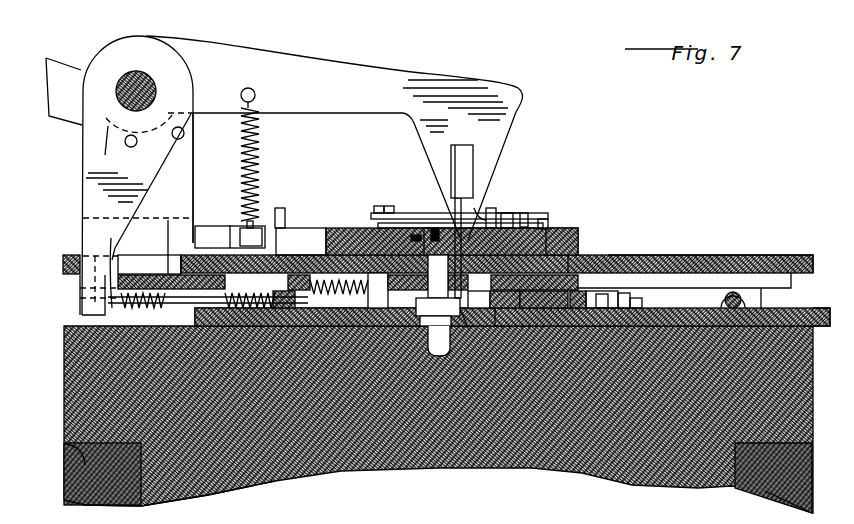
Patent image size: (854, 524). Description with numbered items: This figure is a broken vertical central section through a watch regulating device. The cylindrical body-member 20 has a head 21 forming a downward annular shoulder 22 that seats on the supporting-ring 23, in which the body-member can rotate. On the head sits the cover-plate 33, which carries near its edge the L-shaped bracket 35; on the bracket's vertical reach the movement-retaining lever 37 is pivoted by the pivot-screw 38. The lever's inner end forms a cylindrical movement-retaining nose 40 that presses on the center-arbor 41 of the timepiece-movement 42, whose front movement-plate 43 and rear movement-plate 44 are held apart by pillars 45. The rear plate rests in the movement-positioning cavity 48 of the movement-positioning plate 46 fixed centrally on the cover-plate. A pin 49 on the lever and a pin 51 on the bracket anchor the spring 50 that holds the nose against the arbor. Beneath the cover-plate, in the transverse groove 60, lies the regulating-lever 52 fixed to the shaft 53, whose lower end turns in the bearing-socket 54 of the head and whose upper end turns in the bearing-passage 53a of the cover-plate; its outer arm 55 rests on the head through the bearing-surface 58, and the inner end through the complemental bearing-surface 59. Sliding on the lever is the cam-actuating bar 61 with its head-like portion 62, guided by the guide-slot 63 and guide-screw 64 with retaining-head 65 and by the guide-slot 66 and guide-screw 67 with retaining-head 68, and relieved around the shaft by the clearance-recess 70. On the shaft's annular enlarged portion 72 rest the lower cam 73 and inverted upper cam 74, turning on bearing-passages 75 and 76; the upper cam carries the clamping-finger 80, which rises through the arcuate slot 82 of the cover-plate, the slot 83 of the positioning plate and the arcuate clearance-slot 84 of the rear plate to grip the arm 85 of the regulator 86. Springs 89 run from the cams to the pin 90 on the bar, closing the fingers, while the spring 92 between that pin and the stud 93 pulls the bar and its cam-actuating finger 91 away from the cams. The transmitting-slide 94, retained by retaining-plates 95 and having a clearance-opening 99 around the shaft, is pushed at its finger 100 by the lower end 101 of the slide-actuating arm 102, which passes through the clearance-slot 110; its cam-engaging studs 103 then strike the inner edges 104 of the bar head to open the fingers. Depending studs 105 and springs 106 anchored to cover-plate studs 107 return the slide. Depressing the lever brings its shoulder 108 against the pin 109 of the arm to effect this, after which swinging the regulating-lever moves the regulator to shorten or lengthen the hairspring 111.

The body-member 20 is at (168, 482).
The head 21 is at (65, 393).
The annular shoulder 22 is at (58, 460).
The supporting-ring 23 is at (90, 488).
The cover-plate 33 is at (707, 246).
The L-shaped bracket 35 is at (190, 150).
The movement-retaining lever 37 is at (330, 53).
The pivot-screw 38 is at (138, 66).
The movement-retaining nose 40 is at (466, 157).
The center-arbor 41 is at (461, 171).
The timepiece-movement 42 is at (532, 204).
The front movement-plate 43 is at (480, 203).
The rear movement-plate 44 is at (498, 205).
The pillars 45 is at (517, 212).
The movement-positioning plate 46 is at (568, 224).
The movement-positioning cavity 48 is at (540, 211).
The pin 49 is at (240, 80).
The spring 50 is at (253, 132).
The pin 51 is at (212, 216).
The regulating-lever 52 is at (662, 308).
The shaft 53 is at (428, 345).
The bearing-passage 53a is at (421, 158).
The bearing-socket 54 is at (440, 348).
The outer arm 55 is at (822, 307).
The bearing-surface 58 is at (771, 318).
The bearing-surface 59 is at (230, 320).
The transverse groove 60 is at (731, 277).
The cam-actuating bar 61 is at (570, 257).
The head-like portion 62 is at (634, 300).
The guide-slot 63 is at (622, 290).
The guide-screw 64 is at (613, 283).
The retaining-head 65 is at (605, 283).
The guide-slot 66 is at (322, 300).
The guide-screw 67 is at (356, 300).
The retaining-head 68 is at (338, 300).
The clearance-recess 70 is at (396, 300).
The annular enlarged portion 72 is at (410, 300).
The lower cam 73 is at (372, 205).
The upper cam 74 is at (389, 205).
The bearing-passage 75 is at (452, 330).
The bearing-passage 76 is at (427, 218).
The clamping-finger 80 is at (437, 276).
The arcuate slot 82 is at (464, 312).
The slot 83 is at (470, 205).
The arcuate clearance-slot 84 is at (440, 215).
The arm 85 is at (500, 200).
The regulator 86 is at (408, 225).
The springs 89 is at (321, 240).
The pin 90 is at (266, 222).
The cam-actuating finger 91 is at (355, 240).
The spring 92 is at (267, 208).
The stud 93 is at (183, 250).
The transmitting-slide 94 is at (160, 212).
The retaining-plates 95 is at (75, 280).
The clearance-opening 99 is at (222, 246).
The finger 100 is at (101, 258).
The lower end 101 is at (72, 302).
The slide-actuating arm 102 is at (134, 195).
The cam-engaging studs 103 is at (488, 318).
The inner edges 104 is at (508, 318).
The depending studs 105 is at (178, 300).
The springs 106 is at (137, 300).
The studs 107 is at (114, 300).
The shoulder 108 is at (104, 150).
The pin 109 is at (124, 140).
The clearance-slot 110 is at (148, 258).
The hairspring 111 is at (422, 210).